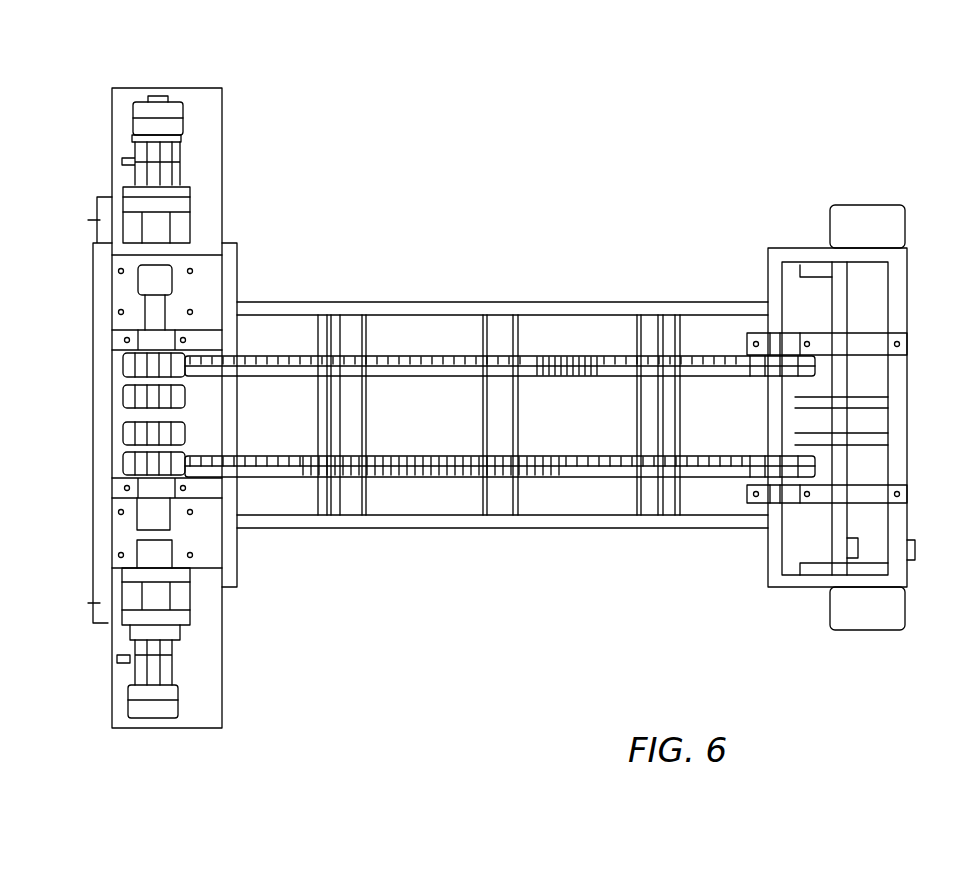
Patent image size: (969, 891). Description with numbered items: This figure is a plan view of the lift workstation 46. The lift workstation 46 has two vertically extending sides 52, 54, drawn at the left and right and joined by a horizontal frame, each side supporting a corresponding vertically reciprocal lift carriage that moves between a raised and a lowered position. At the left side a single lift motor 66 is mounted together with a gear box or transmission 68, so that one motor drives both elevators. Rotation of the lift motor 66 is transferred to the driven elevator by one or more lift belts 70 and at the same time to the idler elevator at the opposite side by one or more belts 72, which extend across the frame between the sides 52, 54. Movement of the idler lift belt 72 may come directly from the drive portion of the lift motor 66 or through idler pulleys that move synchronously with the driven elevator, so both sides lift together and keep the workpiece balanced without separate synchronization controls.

The lift workstation 46 is at (593, 128).
The vertically extending side 52 is at (100, 628).
The vertically extending side 54 is at (856, 632).
The lift motor 66 is at (176, 126).
The gear box or transmission 68 is at (188, 228).
The lift belt 70 is at (188, 437).
The idler lift belt 72 is at (600, 355).